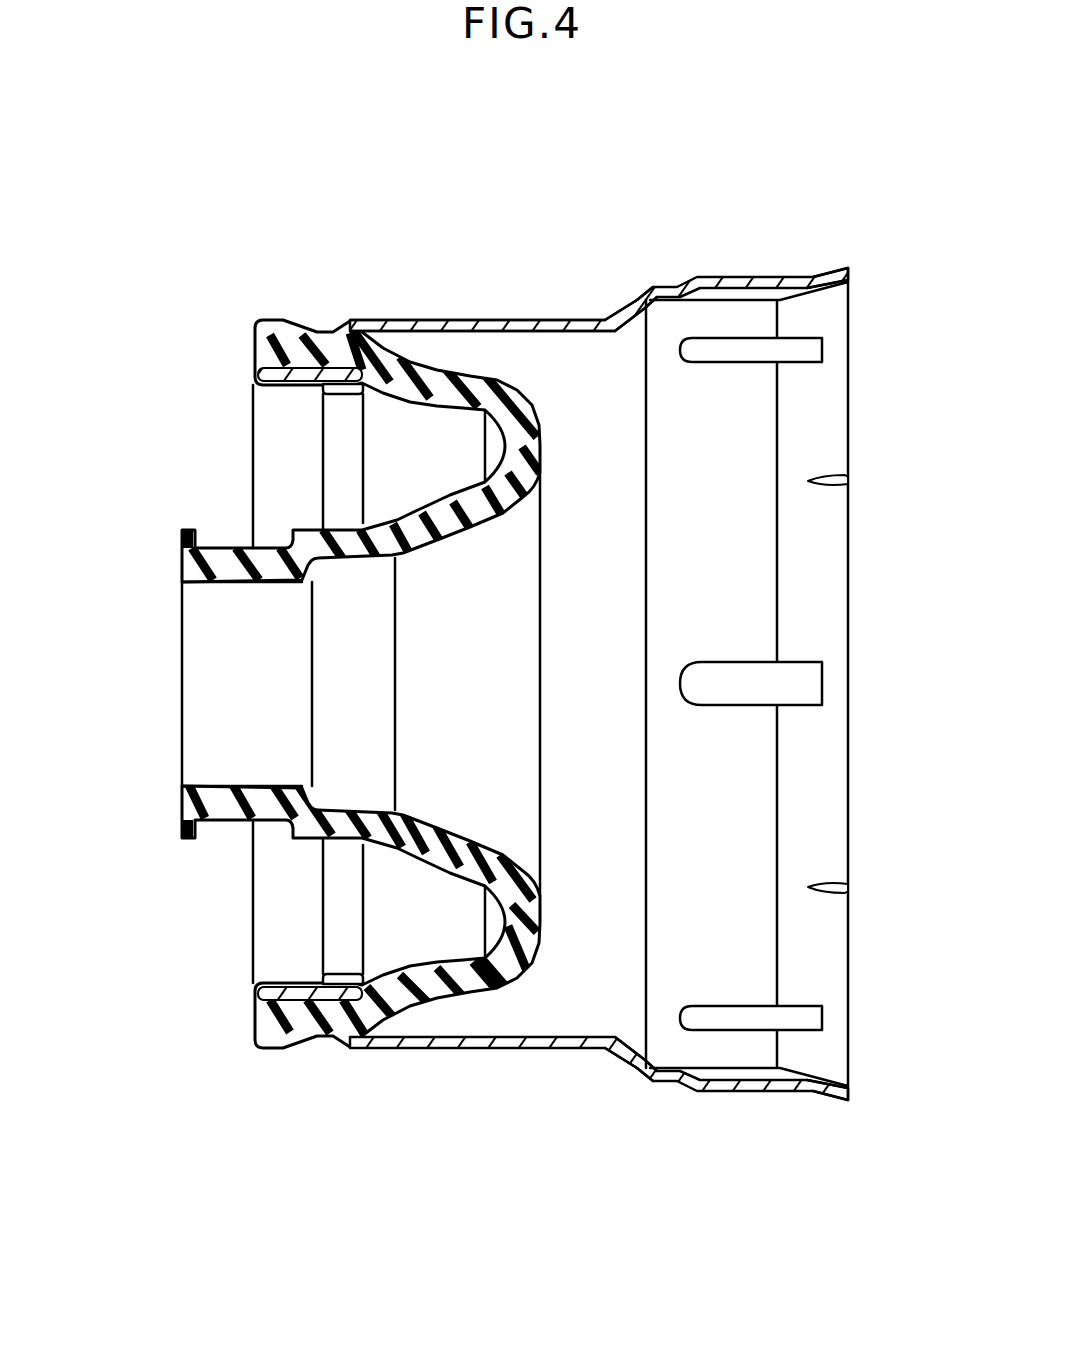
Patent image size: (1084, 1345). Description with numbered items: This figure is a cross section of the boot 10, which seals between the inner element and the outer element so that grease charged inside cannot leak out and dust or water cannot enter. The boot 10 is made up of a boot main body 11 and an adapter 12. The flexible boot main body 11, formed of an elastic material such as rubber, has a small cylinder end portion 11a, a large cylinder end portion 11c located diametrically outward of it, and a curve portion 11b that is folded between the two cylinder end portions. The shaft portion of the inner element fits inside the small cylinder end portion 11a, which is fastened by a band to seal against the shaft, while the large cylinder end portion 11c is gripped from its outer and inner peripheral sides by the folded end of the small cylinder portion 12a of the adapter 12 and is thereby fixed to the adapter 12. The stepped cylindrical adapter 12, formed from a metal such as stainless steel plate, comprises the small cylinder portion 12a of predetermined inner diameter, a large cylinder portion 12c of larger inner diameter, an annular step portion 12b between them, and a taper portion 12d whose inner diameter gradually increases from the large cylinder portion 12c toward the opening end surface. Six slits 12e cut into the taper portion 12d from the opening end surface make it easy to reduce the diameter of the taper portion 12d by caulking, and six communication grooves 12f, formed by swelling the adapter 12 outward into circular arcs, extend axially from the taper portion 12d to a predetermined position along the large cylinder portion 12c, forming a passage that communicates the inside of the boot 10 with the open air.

The boot 10 is at (377, 226).
The boot main body 11 is at (388, 514).
The small cylinder end portion 11a is at (217, 562).
The curve portion 11b is at (542, 443).
The large cylinder end portion 11c is at (285, 348).
The adapter 12 is at (494, 291).
The small cylinder portion 12a is at (525, 318).
The annular step portion 12b is at (626, 305).
The large cylinder portion 12c is at (690, 1084).
The taper portion 12d is at (820, 1097).
The slit 12e is at (945, 478).
The communication groove 12f is at (734, 295).